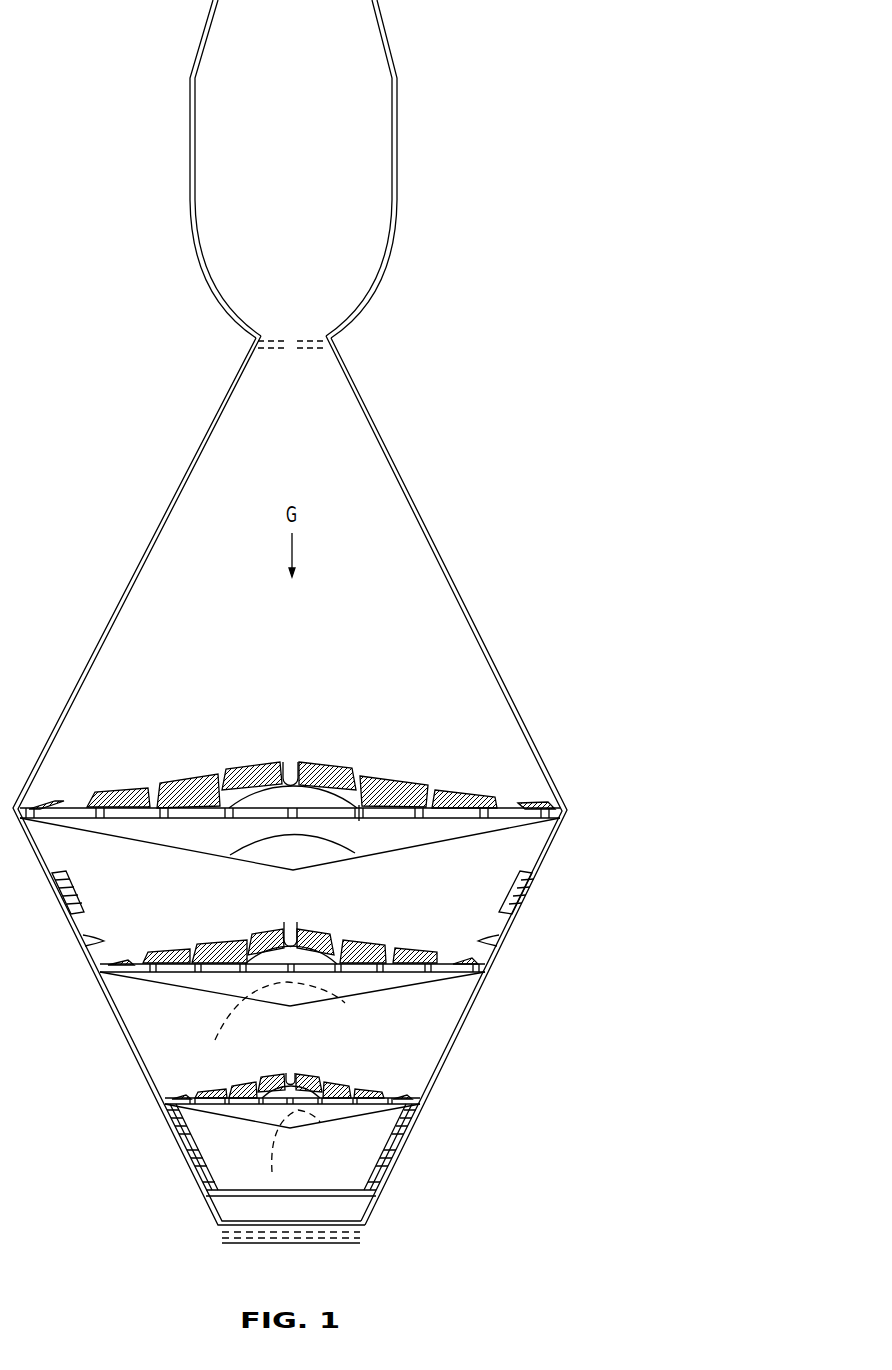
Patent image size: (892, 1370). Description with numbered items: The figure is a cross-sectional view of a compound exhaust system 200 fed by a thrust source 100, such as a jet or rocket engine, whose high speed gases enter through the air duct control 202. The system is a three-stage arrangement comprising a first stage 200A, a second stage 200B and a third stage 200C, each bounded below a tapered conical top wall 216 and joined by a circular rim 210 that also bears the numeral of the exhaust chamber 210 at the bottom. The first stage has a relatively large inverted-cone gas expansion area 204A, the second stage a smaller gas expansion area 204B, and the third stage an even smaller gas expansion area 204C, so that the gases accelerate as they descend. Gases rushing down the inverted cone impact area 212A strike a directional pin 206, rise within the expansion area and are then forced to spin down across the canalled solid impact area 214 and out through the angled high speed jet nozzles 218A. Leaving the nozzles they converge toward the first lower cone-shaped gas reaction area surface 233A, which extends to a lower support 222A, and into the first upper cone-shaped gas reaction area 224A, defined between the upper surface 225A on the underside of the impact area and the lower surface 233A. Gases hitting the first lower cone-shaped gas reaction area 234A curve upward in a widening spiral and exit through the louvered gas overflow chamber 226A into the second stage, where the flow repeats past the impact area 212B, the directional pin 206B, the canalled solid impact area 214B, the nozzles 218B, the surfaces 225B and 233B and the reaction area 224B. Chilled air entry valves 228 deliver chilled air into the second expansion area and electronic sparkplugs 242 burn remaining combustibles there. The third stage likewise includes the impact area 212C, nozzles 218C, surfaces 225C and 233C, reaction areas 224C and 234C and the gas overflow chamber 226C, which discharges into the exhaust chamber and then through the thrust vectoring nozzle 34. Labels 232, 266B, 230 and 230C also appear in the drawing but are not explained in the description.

The thrust source 100 is at (393, 157).
The air duct control 202 is at (327, 342).
The tapered conical top wall 216 is at (113, 611).
The exhaust chamber / circular rim 210 is at (557, 792).
The compound exhaust system 200 is at (552, 696).
The gas expansion area of first stage 204A is at (401, 584).
The gas expansion area of second stage 204B is at (408, 884).
The gas expansion area of third stage 204C is at (376, 1024).
The first stage 200A is at (578, 822).
The second stage 200B is at (508, 981).
The third stage 200C is at (442, 1098).
The directional pin 206 is at (291, 765).
The directional pin of second stage 206B is at (292, 938).
The inverted cone impact area of first stage 212A is at (283, 755).
The inverted cone impact area of second stage 212B is at (280, 942).
The inverted cone impact area of third stage 212C is at (288, 1076).
The canalled solid impact area 214 is at (443, 790).
The canalled solid impact area of second stage 214B is at (243, 940).
The high speed jet nozzles of first stage 218A is at (320, 773).
The high speed jet nozzles of second stage 218B is at (465, 952).
The high speed jet nozzles of third stage 218C is at (412, 1097).
The lower support of first stage 222A is at (360, 803).
The first upper cone-shaped gas reaction area 224A is at (247, 768).
The second upper cone-shaped gas reaction area 224B is at (278, 955).
The third upper cone-shaped gas reaction area 224C is at (287, 1097).
The first upper cone-shaped gas reaction area surface 225A is at (212, 771).
The second upper cone-shaped gas reaction area surface 225B is at (200, 928).
The third upper cone-shaped gas reaction area surface 225C is at (253, 1075).
The gas overflow chamber of first stage 226A is at (317, 820).
The gas overflow chamber of third stage 226C is at (330, 1106).
The chilled air entry valves 228 is at (67, 898).
The wall port 232 is at (520, 912).
The electronic sparkplugs 242 is at (80, 943).
The first lower cone-shaped gas reaction area surface 233A is at (147, 841).
The second lower cone-shaped gas reaction area surface 233B is at (427, 979).
The third lower cone-shaped gas reaction area surface 233C is at (210, 1115).
The first lower cone-shaped gas reaction area 234A is at (317, 848).
The third lower cone-shaped gas reaction area 234C is at (262, 1082).
The LGOC light gas oil collector 266B is at (372, 975).
The HDCV wall section 230 is at (393, 1140).
The wall section C 230C is at (177, 1140).
The thrust vectoring nozzle 34 is at (363, 1233).